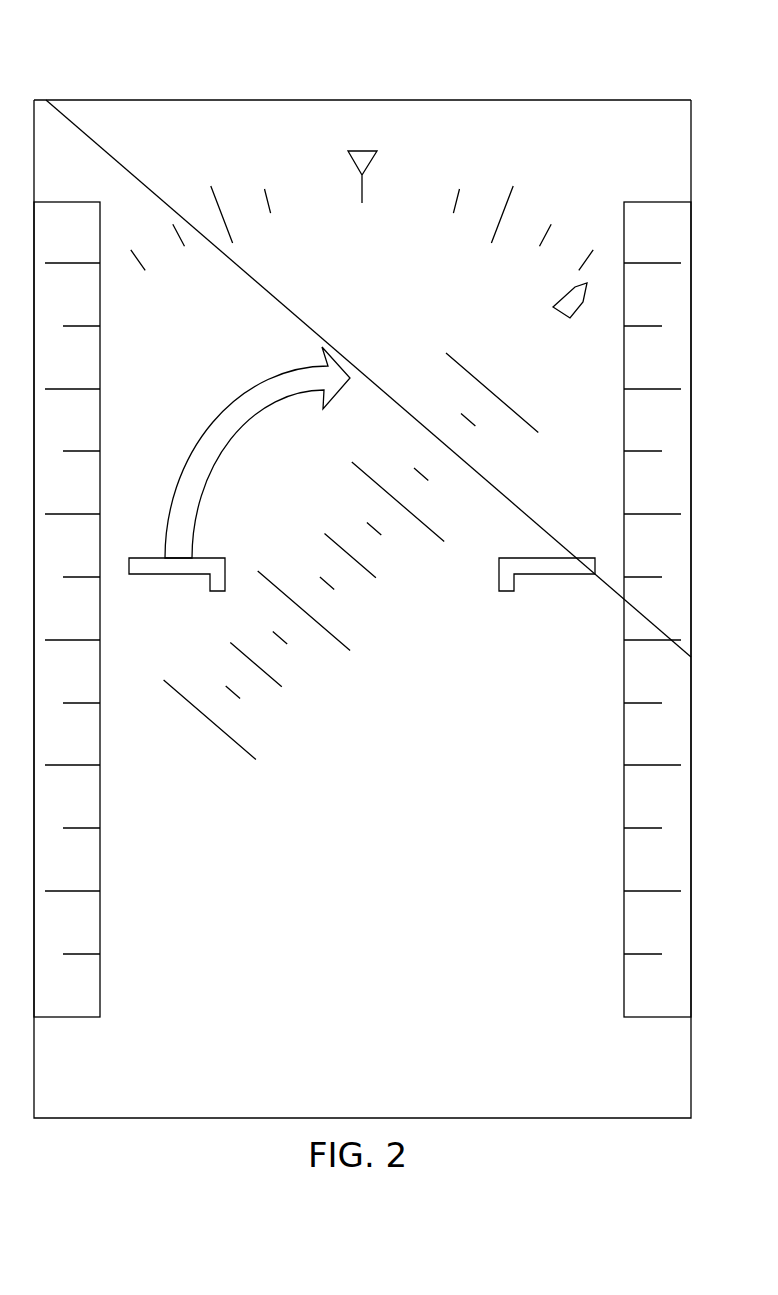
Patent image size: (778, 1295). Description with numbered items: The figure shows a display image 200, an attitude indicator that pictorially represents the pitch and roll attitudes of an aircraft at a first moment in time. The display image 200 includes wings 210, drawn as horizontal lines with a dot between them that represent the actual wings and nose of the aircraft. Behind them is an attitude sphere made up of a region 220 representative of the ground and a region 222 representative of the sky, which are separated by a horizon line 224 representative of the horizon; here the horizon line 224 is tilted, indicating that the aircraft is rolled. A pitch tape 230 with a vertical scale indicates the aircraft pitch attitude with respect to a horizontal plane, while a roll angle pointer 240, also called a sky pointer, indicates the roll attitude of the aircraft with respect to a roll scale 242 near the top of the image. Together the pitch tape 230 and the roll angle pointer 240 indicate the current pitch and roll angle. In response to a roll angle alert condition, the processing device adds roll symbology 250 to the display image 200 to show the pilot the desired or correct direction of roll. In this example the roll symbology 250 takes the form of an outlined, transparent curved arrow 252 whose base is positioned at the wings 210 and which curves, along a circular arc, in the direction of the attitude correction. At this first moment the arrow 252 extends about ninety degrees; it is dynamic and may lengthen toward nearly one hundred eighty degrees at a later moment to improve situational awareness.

The display image 200 is at (145, 84).
The wings 210 is at (588, 557).
The region 220 is at (515, 1110).
The region 222 is at (611, 106).
The horizon line 224 is at (508, 497).
The pitch tape 230 is at (529, 420).
The roll angle pointer 240 is at (563, 294).
The roll scale 242 is at (411, 186).
The roll symbology 250 is at (257, 376).
The curved arrow 252 is at (265, 420).